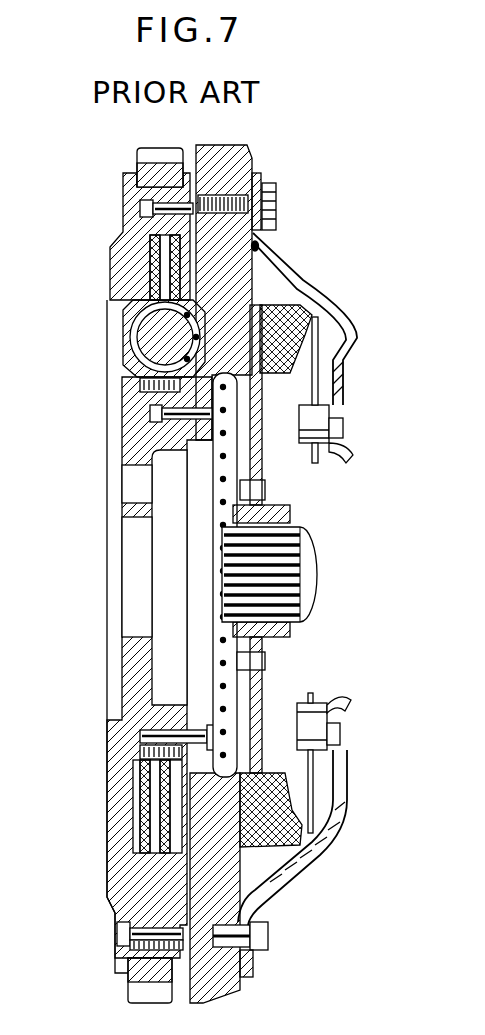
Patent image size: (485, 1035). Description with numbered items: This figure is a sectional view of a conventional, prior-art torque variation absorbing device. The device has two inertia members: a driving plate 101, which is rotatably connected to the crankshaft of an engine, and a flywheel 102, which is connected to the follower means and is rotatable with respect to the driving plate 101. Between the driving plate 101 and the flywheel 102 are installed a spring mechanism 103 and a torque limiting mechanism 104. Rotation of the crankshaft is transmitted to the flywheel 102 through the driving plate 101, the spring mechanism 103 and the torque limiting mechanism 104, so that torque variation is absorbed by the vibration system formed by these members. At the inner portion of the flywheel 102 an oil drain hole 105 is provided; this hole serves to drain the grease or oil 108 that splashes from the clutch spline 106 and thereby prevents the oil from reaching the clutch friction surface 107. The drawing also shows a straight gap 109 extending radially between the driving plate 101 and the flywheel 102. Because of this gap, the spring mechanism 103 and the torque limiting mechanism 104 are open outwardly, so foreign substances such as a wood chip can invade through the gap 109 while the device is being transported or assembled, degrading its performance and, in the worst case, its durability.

The driving plate 101 is at (120, 263).
The flywheel 102 is at (252, 230).
The spring mechanism 103 is at (128, 338).
The torque limiting mechanism 104 is at (240, 305).
The oil drain hole 105 is at (250, 388).
The clutch spline 106 is at (290, 520).
The clutch friction surface 107 is at (252, 344).
The grease or oil 108 is at (232, 433).
The straight gap 109 is at (250, 251).